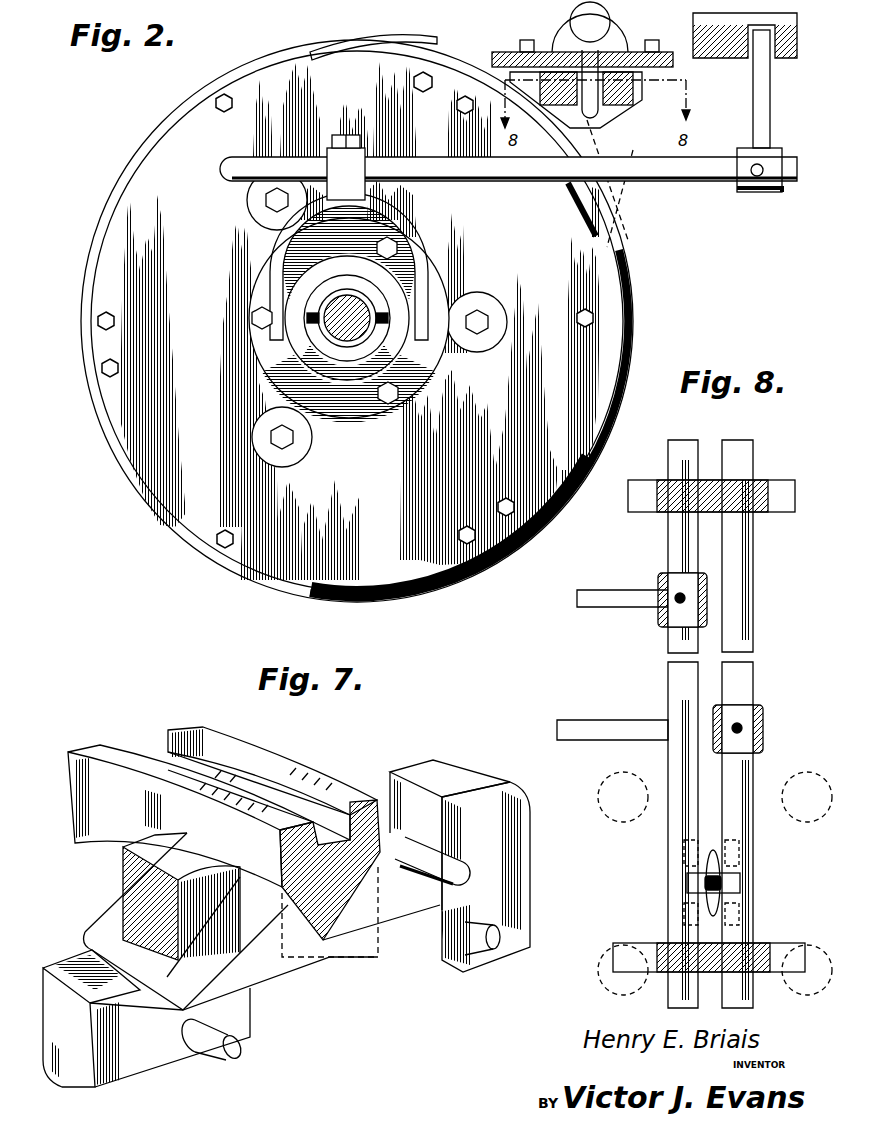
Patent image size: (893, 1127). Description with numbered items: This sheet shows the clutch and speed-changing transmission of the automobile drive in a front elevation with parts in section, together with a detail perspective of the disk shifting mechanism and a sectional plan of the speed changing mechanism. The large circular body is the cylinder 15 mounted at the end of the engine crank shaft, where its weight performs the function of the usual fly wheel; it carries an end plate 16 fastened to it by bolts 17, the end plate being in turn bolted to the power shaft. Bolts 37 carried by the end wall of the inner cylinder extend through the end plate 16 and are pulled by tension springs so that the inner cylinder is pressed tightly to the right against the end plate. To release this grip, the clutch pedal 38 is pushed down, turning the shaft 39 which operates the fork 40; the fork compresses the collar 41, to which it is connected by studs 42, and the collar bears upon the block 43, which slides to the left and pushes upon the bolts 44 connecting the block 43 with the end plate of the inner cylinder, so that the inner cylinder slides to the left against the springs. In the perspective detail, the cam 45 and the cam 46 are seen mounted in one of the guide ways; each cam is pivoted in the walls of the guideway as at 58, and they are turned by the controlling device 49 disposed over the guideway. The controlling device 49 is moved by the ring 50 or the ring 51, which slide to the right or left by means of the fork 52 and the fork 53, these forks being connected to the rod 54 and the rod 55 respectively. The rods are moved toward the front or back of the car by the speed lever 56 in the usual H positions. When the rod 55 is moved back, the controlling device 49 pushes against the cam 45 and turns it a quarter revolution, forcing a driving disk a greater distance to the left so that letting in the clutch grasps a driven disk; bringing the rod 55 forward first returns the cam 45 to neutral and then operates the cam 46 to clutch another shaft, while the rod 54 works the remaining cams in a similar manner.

In FIG. 2, the cylinder 15 is at (290, 60).
In FIG. 2, the end plate 16 is at (360, 320).
In FIG. 2, the bolts 17 is at (461, 110).
In FIG. 2, the bolts 37 is at (266, 200).
In FIG. 2, the clutch pedal 38 is at (753, 105).
In FIG. 2, the shaft 39 is at (480, 172).
In FIG. 2, the fork 40 is at (406, 246).
In FIG. 2, the collar 41 is at (300, 352).
In FIG. 2, the studs 42 is at (440, 290).
In FIG. 2, the block 43 is at (352, 348).
In FIG. 2, the bolts 44 is at (380, 248).
In FIG. 7, the cam 45 is at (160, 1058).
In FIG. 7, the cam 46 is at (478, 960).
In FIG. 7, the controlling device 49 is at (110, 920).
In FIG. 7, the ring 50 is at (110, 835).
In FIG. 2, the ring 51 is at (146, 152).
In FIG. 2, the fork 52 is at (462, 588).
In FIG. 8, the fork 52 is at (596, 730).
In FIG. 2, the fork 53 is at (520, 60).
In FIG. 8, the fork 53 is at (622, 597).
In FIG. 2, the rod 54 is at (633, 90).
In FIG. 8, the rod 54 is at (748, 672).
In FIG. 2, the rod 55 is at (548, 72).
In FIG. 8, the rod 55 is at (678, 672).
In FIG. 2, the speed lever 56 is at (572, 20).
In FIG. 8, the speed lever 56 is at (722, 884).
In FIG. 7, the pivot 58 is at (238, 1052).